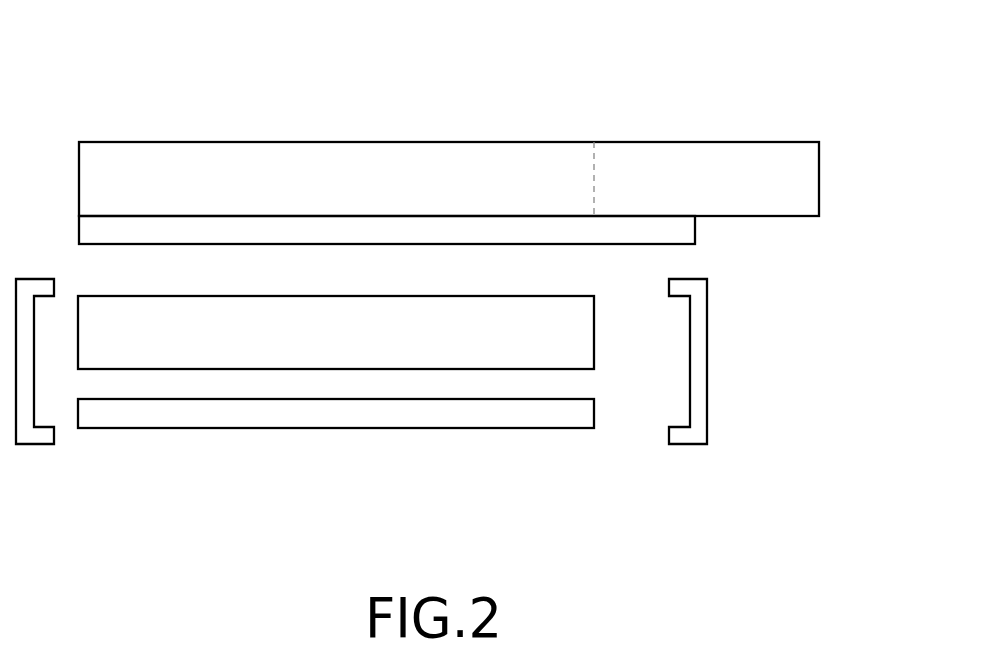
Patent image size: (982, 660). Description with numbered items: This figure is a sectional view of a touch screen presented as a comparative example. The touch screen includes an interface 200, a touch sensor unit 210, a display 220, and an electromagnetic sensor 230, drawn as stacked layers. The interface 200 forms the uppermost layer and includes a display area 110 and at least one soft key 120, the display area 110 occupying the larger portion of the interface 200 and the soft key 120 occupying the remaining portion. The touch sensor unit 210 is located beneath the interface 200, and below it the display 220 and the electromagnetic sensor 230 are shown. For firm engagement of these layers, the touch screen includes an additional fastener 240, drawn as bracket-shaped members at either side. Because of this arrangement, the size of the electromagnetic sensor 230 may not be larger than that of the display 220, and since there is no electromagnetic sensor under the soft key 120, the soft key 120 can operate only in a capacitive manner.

The display area 110 is at (594, 130).
The soft key 120 is at (819, 130).
The interface 200 is at (820, 176).
The touch sensor unit 210 is at (696, 233).
The display 220 is at (595, 331).
The electromagnetic sensor 230 is at (595, 411).
The additional fastener 240 is at (708, 362).